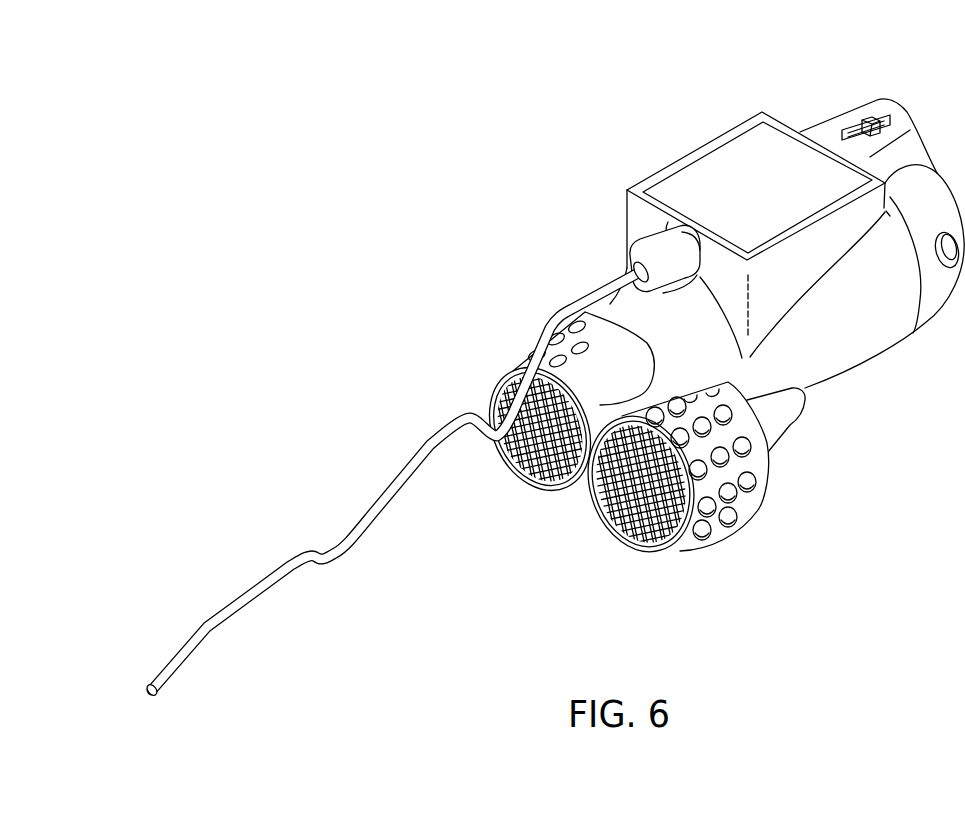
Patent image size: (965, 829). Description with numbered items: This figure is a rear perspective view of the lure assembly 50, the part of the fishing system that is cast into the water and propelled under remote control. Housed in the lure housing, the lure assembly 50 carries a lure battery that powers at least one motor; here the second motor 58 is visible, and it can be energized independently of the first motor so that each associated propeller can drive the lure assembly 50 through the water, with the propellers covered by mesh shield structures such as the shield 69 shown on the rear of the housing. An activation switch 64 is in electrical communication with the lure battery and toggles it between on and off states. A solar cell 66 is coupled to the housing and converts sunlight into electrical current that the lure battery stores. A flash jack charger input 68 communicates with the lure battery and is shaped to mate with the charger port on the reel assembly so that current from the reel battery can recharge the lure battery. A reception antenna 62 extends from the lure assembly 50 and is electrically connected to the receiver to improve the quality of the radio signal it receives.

The lure assembly 50 is at (554, 372).
The second motor 58 is at (780, 426).
The reception antenna 62 is at (212, 632).
The activation switch 64 is at (872, 120).
The solar cell 66 is at (720, 160).
The flash jack charger input 68 is at (615, 355).
The front treatment head 69 is at (738, 473).